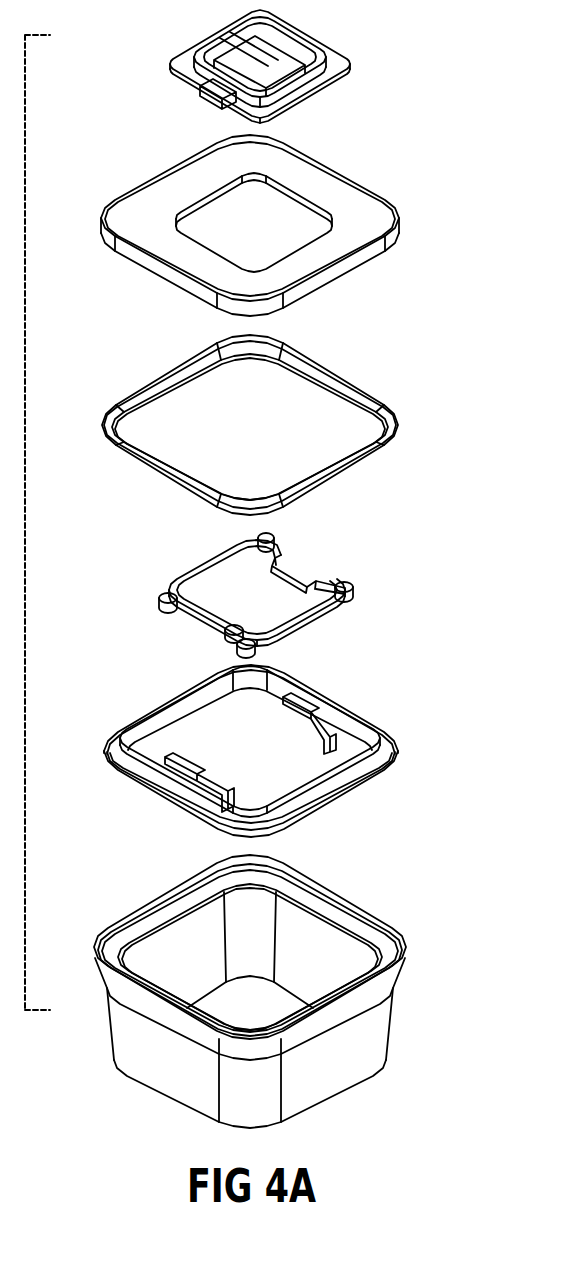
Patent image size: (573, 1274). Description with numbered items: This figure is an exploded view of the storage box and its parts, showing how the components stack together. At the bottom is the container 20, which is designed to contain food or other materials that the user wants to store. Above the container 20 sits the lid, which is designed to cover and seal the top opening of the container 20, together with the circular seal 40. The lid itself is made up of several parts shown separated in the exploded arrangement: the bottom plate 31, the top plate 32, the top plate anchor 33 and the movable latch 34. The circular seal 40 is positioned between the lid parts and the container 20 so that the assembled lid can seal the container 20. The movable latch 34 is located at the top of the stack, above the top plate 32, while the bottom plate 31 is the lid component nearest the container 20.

The container 20 is at (405, 962).
The bottom plate 31 is at (395, 762).
The top plate 32 is at (398, 245).
The top plate anchor 33 is at (340, 606).
The movable latch 34 is at (355, 72).
The circular seal 40 is at (398, 428).